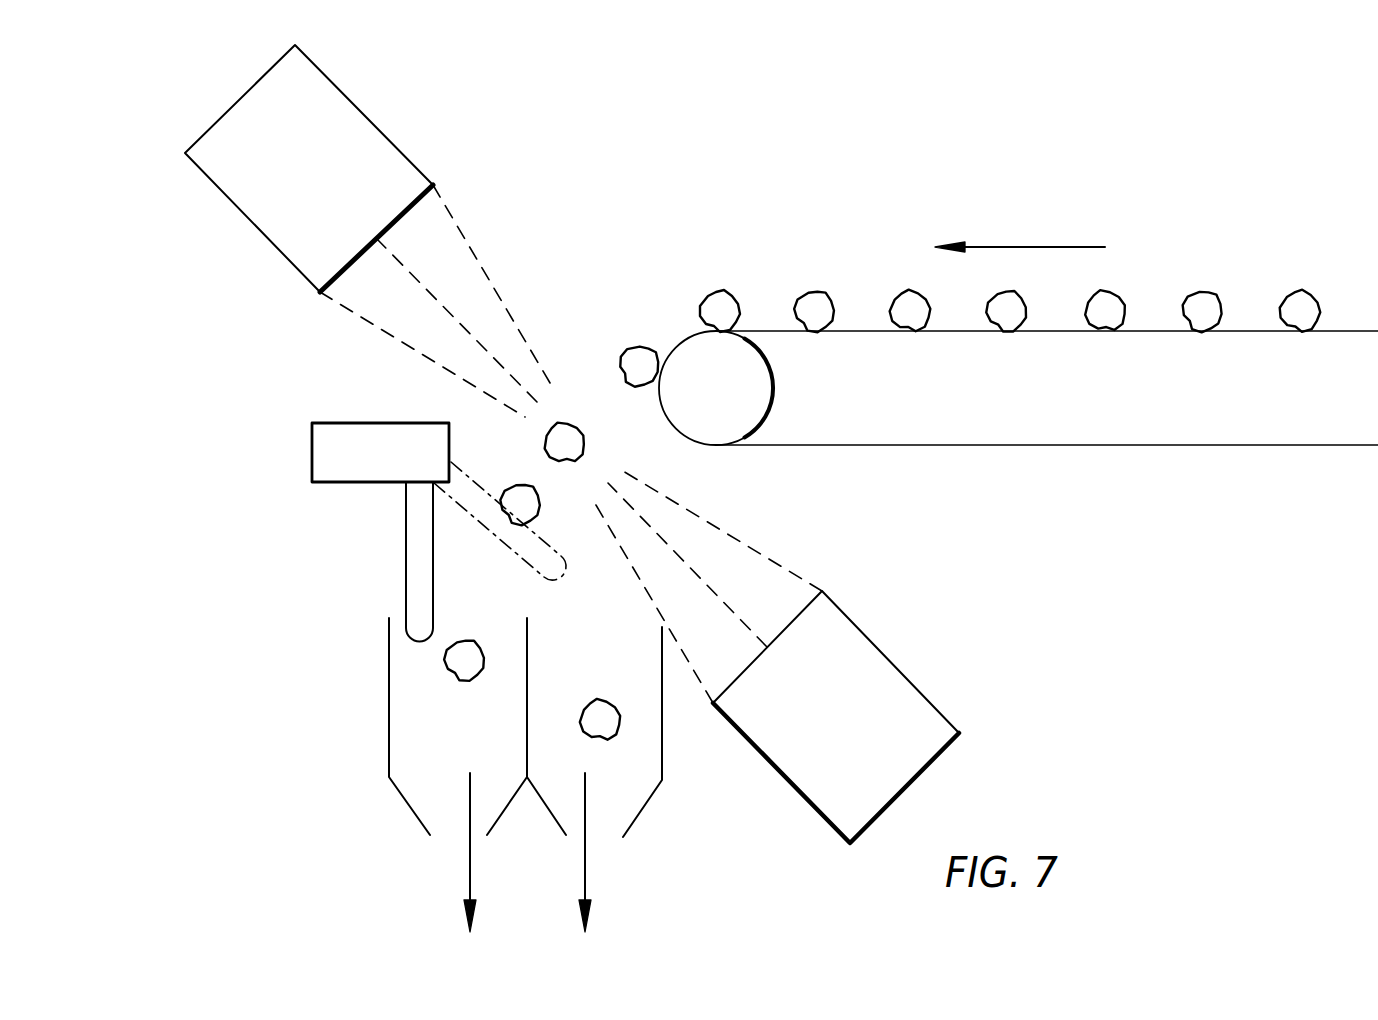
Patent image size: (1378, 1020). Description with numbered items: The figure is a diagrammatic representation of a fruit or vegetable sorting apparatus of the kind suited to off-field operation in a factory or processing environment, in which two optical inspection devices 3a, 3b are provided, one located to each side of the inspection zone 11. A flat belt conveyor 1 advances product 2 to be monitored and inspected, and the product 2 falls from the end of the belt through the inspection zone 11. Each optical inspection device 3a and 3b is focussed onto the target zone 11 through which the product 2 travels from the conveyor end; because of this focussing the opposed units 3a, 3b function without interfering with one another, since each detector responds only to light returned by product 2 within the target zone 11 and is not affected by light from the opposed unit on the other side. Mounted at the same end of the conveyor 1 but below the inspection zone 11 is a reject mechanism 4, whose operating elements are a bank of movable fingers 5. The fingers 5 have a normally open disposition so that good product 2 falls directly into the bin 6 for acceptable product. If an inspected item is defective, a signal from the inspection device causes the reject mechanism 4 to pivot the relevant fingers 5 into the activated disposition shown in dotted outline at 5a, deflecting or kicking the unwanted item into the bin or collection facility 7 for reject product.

The flat belt conveyor 1 is at (1328, 335).
The product 2 is at (808, 295).
The optical inspection device 3a is at (377, 137).
The optical inspection device 3b is at (873, 640).
The reject mechanism 4 is at (316, 447).
The movable fingers 5 is at (418, 553).
The activated disposition of fingers 5a is at (533, 572).
The bin for acceptable product 6 is at (389, 742).
The bin for reject product 7 is at (662, 746).
The inspection zone 11 is at (592, 400).